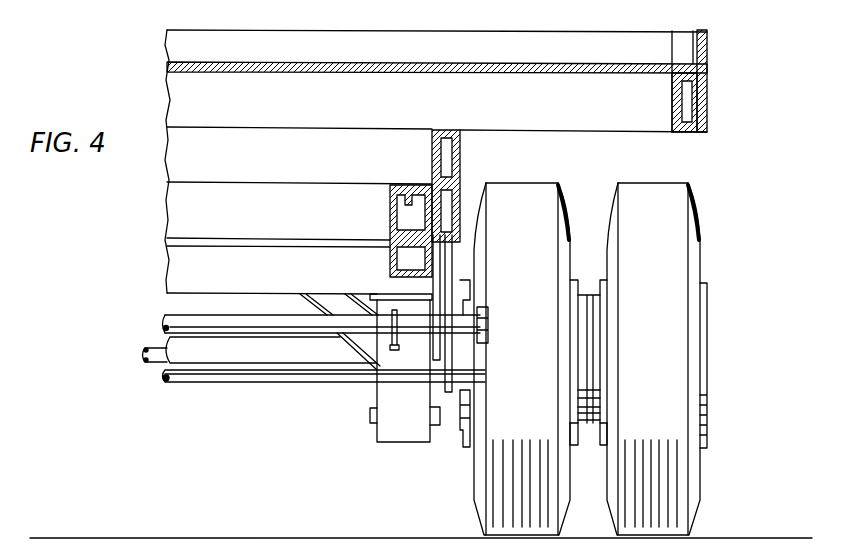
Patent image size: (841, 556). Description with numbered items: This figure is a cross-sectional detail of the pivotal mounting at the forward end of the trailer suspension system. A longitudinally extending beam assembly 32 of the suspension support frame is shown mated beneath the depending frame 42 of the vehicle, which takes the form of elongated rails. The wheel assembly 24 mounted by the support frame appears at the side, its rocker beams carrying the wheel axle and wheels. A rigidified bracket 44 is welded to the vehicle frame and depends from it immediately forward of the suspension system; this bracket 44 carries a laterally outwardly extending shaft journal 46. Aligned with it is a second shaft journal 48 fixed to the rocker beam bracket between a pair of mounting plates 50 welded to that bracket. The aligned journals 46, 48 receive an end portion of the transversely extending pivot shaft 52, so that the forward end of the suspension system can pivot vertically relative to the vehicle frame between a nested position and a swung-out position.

The wheel assembly 24 is at (697, 232).
The beam assembly 32 is at (389, 218).
The depending frame 42 is at (462, 156).
The rigidified bracket 44 is at (441, 278).
The shaft journal 46 is at (460, 345).
The shaft journal 48 is at (403, 313).
The mounting plate 50 is at (428, 345).
The pivot shaft 52 is at (255, 322).